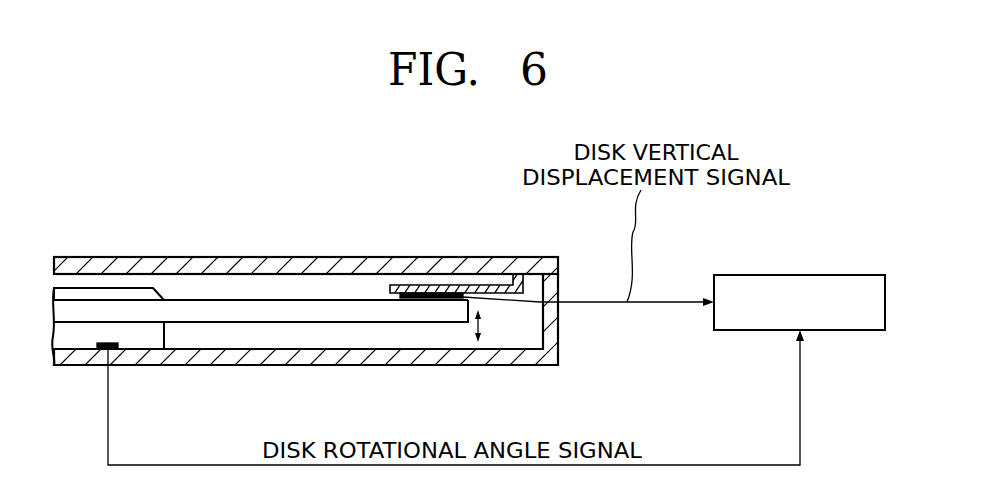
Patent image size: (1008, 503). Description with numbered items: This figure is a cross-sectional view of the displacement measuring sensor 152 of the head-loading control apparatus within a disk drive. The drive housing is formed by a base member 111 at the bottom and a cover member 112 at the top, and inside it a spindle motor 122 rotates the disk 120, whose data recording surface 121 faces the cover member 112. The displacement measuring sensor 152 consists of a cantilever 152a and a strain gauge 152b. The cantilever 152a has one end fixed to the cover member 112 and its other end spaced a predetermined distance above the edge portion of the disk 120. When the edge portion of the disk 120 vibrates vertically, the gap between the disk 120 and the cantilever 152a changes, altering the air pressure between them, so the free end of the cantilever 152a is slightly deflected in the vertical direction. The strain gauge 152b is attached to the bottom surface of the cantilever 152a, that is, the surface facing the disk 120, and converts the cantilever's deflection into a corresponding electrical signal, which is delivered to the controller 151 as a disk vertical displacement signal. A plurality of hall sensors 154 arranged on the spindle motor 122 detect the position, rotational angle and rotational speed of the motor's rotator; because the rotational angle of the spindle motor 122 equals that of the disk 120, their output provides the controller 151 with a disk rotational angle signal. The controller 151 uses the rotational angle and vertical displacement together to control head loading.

The base member 111 is at (326, 356).
The cover member 112 is at (257, 257).
The disk 120 is at (261, 311).
The data recording surface 121 is at (320, 300).
The spindle motor 122 is at (78, 338).
The controller 151 is at (801, 275).
The displacement measuring sensor 152 is at (455, 233).
The cantilever 152a is at (405, 285).
The strain gauge 152b is at (405, 203).
The hall sensors 154 is at (112, 350).